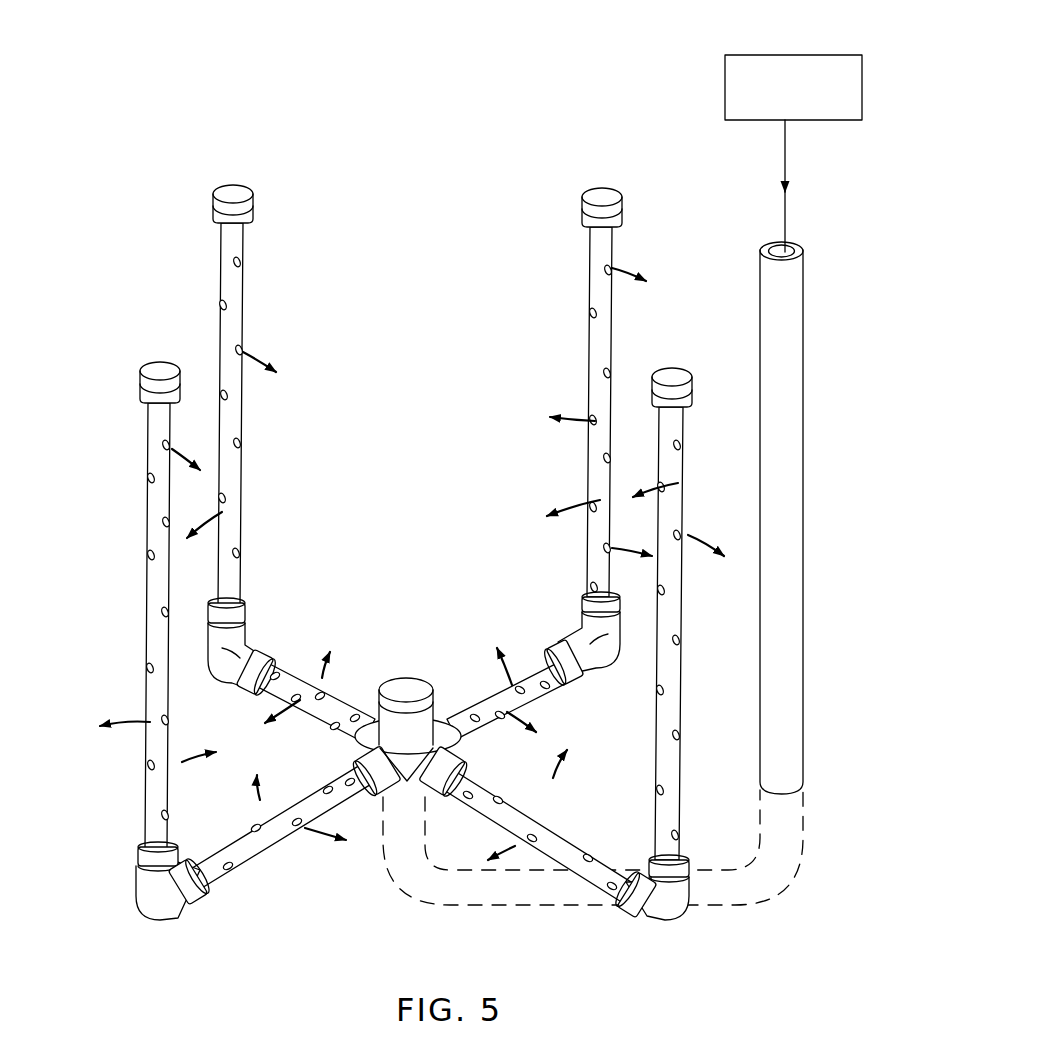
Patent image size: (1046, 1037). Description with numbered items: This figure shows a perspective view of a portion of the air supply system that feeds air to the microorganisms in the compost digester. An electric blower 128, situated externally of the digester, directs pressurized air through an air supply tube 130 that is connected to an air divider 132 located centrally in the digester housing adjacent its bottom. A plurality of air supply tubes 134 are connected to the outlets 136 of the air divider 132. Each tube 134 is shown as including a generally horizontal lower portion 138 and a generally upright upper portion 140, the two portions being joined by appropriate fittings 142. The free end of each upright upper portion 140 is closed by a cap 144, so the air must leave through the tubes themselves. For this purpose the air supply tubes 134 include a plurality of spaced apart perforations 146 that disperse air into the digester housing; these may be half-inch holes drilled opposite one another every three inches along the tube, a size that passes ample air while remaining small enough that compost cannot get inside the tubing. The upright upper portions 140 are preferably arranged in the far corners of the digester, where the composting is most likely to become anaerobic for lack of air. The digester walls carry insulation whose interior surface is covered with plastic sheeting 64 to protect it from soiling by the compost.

The plastic sheeting 64 is at (675, 380).
The electric blower 128 is at (836, 64).
The air supply tube 130 is at (798, 592).
The air divider 132 is at (446, 718).
The air supply tubes 134 is at (320, 672).
The outlets 136 is at (468, 768).
The lower portion 138 is at (332, 702).
The upper portion 140 is at (148, 582).
The fittings 142 is at (238, 636).
The cap 144 is at (153, 372).
The perforations 146 is at (240, 442).